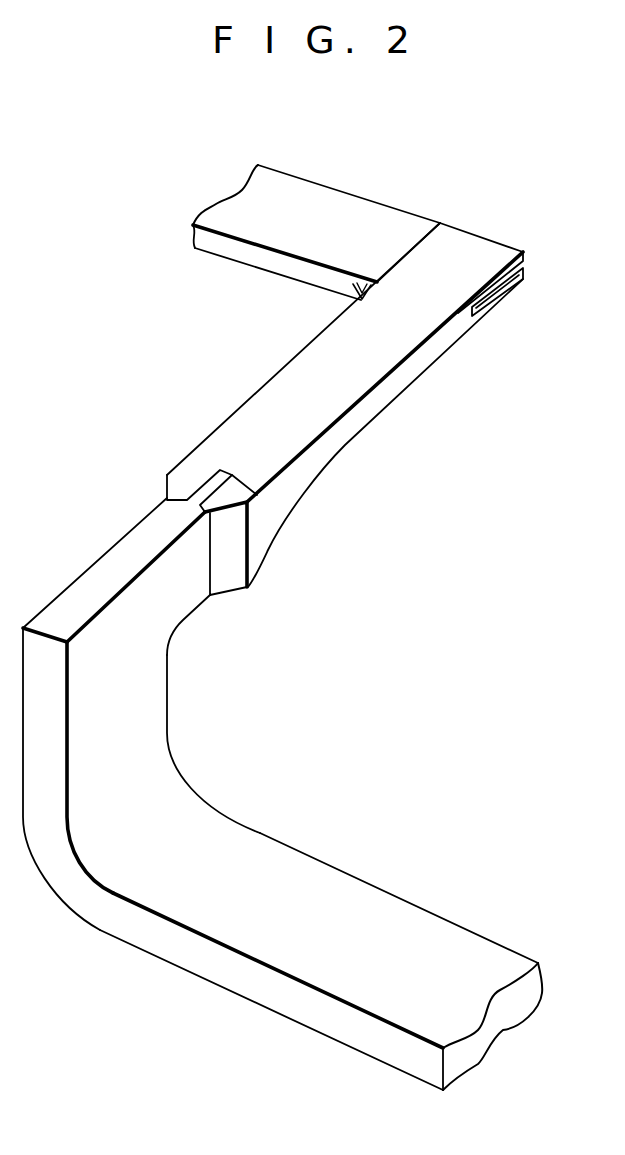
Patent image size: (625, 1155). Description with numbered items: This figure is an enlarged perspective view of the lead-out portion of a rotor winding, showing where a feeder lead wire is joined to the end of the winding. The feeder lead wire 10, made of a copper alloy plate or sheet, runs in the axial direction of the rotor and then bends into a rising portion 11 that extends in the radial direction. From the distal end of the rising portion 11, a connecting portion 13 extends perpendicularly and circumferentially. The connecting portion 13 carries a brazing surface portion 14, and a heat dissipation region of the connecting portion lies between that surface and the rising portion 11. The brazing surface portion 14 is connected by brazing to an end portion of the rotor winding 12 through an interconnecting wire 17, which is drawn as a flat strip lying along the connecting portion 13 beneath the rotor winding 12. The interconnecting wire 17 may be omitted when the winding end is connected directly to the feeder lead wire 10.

The feeder lead wire 10 is at (331, 889).
The rising portion 11 is at (175, 787).
The rotor winding 12 is at (393, 224).
The connecting portion 13 is at (173, 602).
The brazing surface portion 14 is at (257, 493).
The interconnecting wire 17 is at (328, 414).